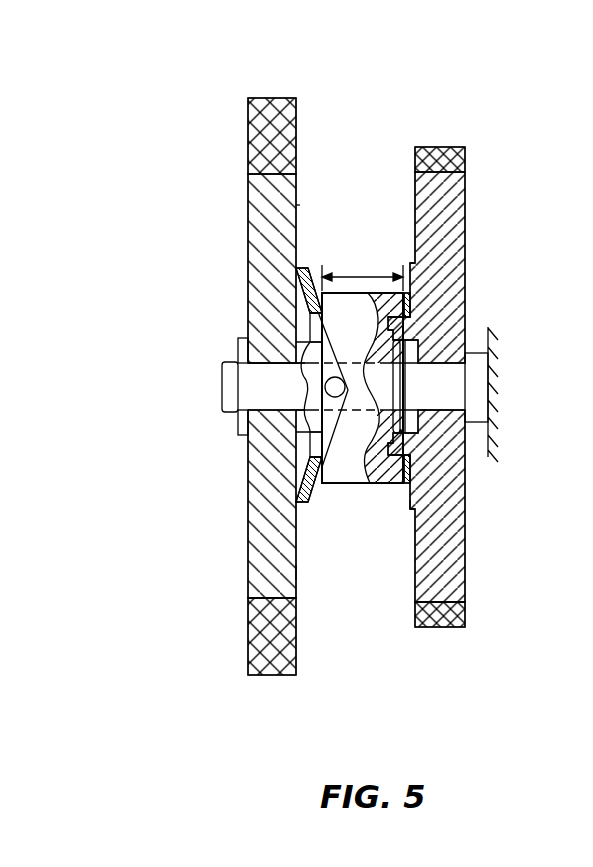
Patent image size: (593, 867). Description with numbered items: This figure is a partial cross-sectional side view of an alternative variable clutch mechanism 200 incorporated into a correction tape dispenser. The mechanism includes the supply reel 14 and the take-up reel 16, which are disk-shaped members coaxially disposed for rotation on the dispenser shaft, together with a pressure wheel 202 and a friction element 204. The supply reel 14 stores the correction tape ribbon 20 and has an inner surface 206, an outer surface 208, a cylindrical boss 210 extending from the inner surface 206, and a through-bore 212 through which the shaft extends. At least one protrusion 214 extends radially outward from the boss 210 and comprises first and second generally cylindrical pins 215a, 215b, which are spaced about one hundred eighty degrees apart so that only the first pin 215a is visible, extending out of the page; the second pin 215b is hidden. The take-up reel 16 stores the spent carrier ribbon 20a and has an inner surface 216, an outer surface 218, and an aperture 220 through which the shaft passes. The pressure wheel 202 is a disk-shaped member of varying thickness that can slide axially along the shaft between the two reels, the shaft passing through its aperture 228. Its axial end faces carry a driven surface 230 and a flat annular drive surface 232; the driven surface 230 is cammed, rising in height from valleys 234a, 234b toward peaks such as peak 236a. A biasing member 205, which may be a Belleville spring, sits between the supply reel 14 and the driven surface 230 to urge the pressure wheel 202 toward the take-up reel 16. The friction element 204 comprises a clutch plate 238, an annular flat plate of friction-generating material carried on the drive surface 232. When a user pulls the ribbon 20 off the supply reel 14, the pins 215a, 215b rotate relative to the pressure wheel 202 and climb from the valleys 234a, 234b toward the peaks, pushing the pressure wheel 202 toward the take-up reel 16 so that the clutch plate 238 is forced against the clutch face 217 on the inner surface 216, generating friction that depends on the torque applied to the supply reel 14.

The variable clutch mechanism 200 is at (441, 76).
The correction tape ribbon 20 is at (248, 118).
The supply reel 14 is at (268, 213).
The outer surface 208 is at (248, 572).
The carrier ribbon 20a is at (455, 148).
The take-up reel 16 is at (448, 213).
The clutch face 217 is at (408, 512).
The outer surface 218 is at (466, 258).
The clutch plate 238 is at (411, 499).
The drive surface 232 is at (410, 300).
The aperture 228 is at (405, 324).
The valley 234a is at (400, 386).
The valley 234b is at (402, 430).
The aperture 220 is at (458, 370).
The through-bore 212 is at (275, 405).
The second cylindrical pin 215b is at (248, 438).
The driven surface 230 is at (305, 463).
The peak 236a is at (305, 285).
The cylindrical boss 210 is at (320, 313).
The pressure wheel 202 is at (358, 492).
The protrusion 214 is at (206, 362).
The first cylindrical pin 215a is at (305, 344).
The biasing member 205 is at (308, 500).
The inner surface 206 is at (297, 568).
The friction element 204 is at (404, 492).
The inner surface 216 is at (409, 202).